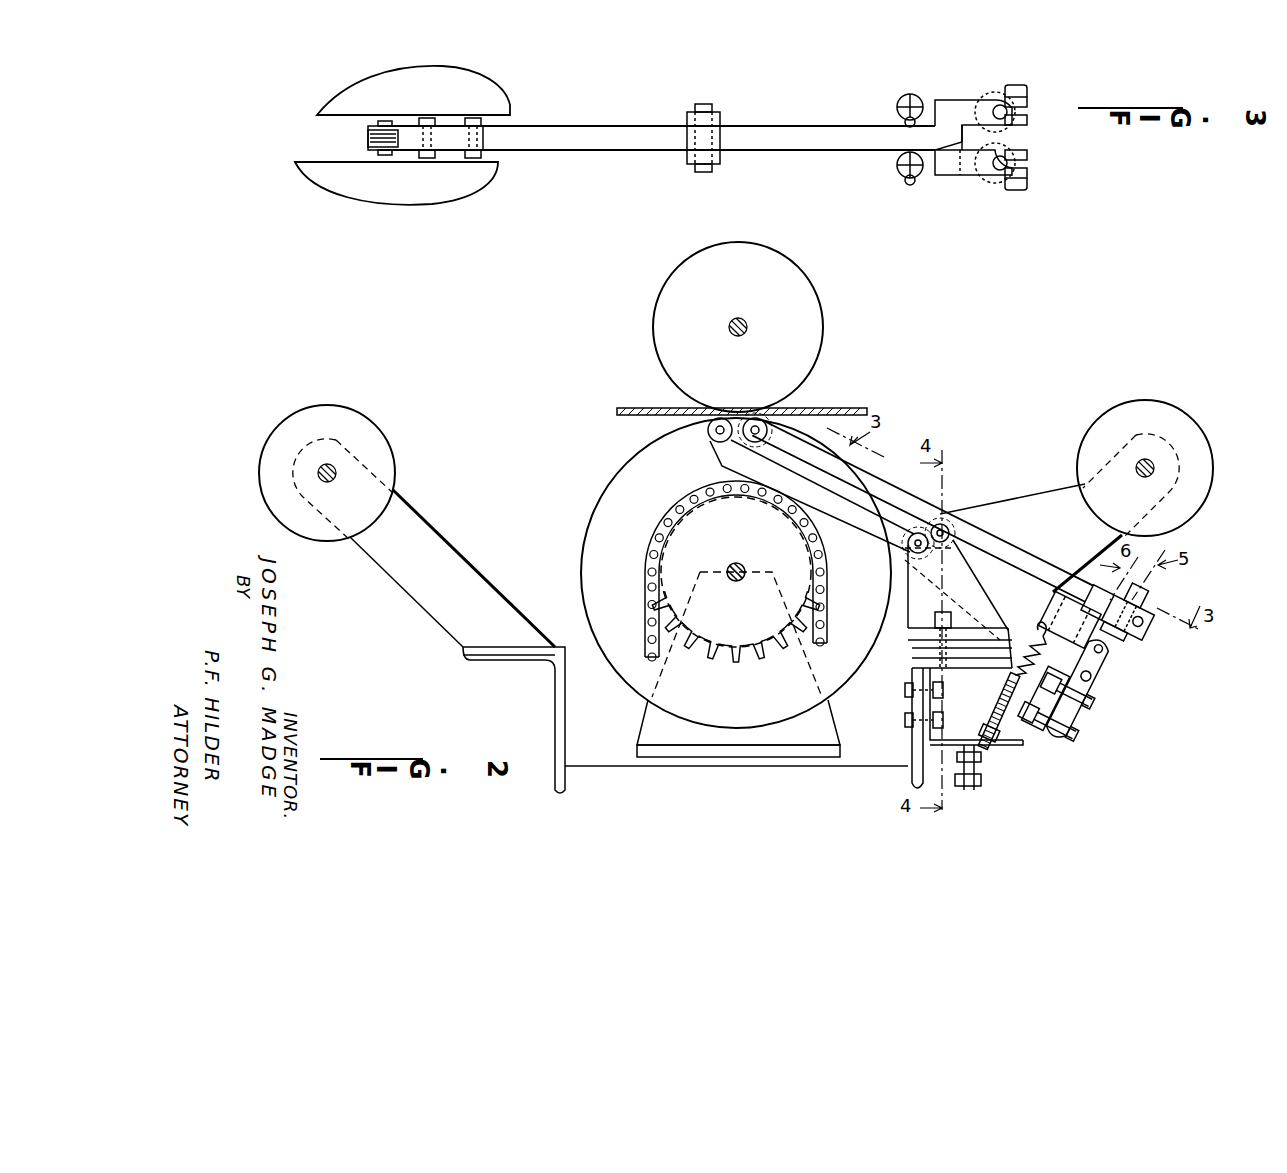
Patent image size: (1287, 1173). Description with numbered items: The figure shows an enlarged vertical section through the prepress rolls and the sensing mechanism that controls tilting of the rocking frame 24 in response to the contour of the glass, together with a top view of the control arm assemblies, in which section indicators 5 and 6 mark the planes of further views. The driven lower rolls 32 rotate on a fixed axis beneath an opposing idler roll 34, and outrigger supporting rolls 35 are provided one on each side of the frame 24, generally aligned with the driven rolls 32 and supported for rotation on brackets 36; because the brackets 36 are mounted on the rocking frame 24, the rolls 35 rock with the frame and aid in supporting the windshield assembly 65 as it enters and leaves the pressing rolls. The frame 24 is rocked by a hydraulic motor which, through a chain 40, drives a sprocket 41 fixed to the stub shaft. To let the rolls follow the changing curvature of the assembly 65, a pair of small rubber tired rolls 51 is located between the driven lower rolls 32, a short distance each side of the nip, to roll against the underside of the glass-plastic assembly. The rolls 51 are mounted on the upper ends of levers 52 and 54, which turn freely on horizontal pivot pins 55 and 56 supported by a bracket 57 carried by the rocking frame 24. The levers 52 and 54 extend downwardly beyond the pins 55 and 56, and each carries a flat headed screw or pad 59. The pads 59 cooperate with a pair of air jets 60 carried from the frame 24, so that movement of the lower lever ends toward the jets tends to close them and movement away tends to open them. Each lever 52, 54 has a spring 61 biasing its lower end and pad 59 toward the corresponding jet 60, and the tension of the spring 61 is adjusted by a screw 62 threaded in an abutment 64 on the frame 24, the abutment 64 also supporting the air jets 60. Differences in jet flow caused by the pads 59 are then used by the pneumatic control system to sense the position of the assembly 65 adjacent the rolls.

In FIG. 2, the rocking frame 24 is at (912, 757).
In FIG. 3, the driven lower rolls 32 is at (402, 135).
In FIG. 2, the driven lower rolls 32 is at (650, 507).
In FIG. 2, the upper roller 34 is at (758, 295).
In FIG. 2, the outrigger supporting rolls 35 is at (385, 460).
In FIG. 2, the brackets 36 is at (445, 620).
In FIG. 2, the chain 40 is at (828, 600).
In FIG. 2, the sprocket 41 is at (750, 541).
In FIG. 3, the rubber tired rolls 51 is at (368, 138).
In FIG. 2, the rubber tired rolls 51 is at (765, 418).
In FIG. 2, the lever 52 is at (722, 452).
In FIG. 3, the lever 54 is at (790, 113).
In FIG. 2, the lever 54 is at (883, 488).
In FIG. 2, the horizontal pivot pin 55 is at (905, 556).
In FIG. 3, the horizontal pivot pin 56 is at (705, 112).
In FIG. 2, the horizontal pivot pin 56 is at (950, 530).
In FIG. 2, the bracket 57 is at (953, 601).
In FIG. 3, the flat headed screw or pad 59 is at (1000, 90).
In FIG. 2, the flat headed screw or pad 59 is at (1128, 640).
In FIG. 2, the air jets 60 is at (1112, 660).
In FIG. 3, the spring 61 is at (920, 100).
In FIG. 2, the screw 62 is at (981, 784).
In FIG. 2, the abutment 64 is at (1008, 748).
In FIG. 2, the assembly 65 is at (848, 408).
In FIG. 2, the bar 5 is at (1085, 690).
In FIG. 2, the spring 6 is at (1075, 650).